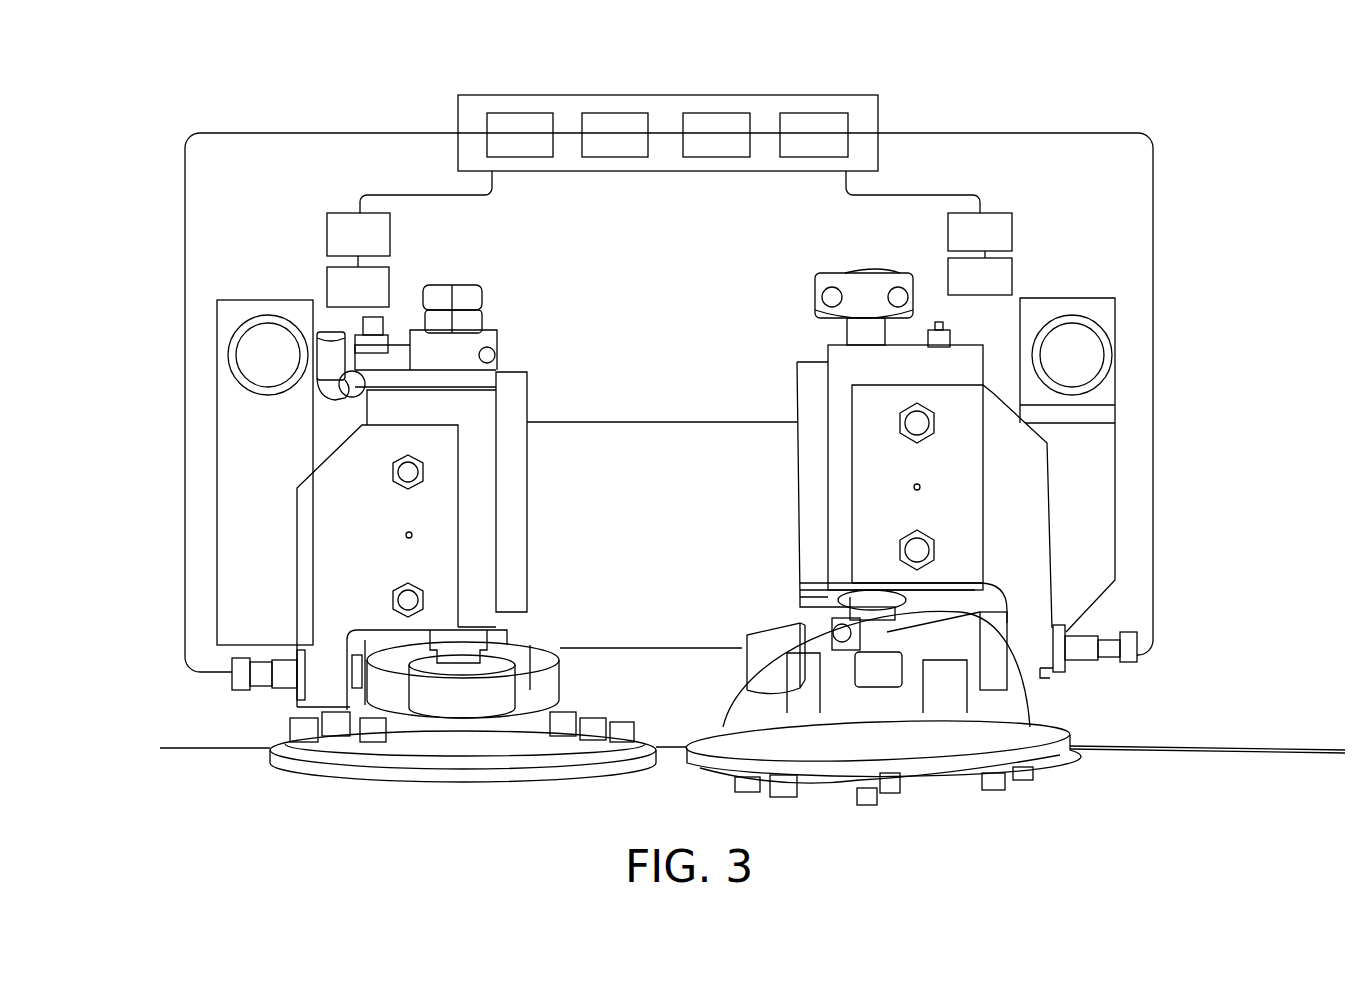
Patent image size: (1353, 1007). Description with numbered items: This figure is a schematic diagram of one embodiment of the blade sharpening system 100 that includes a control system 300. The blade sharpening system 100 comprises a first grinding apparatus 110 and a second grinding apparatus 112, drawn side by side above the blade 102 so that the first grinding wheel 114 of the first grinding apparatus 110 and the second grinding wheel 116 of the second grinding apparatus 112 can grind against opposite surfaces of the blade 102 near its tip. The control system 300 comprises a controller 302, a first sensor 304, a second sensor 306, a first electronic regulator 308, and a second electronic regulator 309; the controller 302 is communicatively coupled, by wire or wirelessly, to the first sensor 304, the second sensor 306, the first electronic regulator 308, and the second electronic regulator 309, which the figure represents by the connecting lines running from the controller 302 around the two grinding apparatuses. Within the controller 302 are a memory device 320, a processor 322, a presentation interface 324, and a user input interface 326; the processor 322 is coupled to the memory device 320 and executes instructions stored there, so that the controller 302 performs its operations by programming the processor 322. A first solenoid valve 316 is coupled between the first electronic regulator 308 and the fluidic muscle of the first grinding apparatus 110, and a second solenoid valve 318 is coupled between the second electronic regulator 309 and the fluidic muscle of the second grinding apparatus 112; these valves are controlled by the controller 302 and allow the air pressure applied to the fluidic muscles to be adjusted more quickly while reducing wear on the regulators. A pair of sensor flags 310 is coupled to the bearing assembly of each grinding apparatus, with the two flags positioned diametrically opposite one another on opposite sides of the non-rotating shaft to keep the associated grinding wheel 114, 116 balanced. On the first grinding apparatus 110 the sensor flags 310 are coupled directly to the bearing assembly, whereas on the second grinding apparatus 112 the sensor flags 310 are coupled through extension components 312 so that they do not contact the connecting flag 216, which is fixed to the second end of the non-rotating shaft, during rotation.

The blade sharpening system 100 is at (113, 140).
The blade 102 is at (212, 750).
The first grinding apparatus 110 is at (516, 345).
The second grinding apparatus 112 is at (800, 345).
The first grinding wheel 114 is at (400, 770).
The second grinding wheel 116 is at (765, 780).
The connecting flag 216 is at (1063, 660).
The control system 300 is at (664, 301).
The controller 302 is at (674, 111).
The first sensor 304 is at (240, 665).
The second sensor 306 is at (1113, 652).
The first electronic regulator 308 is at (383, 249).
The second electronic regulator 309 is at (1004, 248).
The sensor flag 310 is at (385, 697).
The extension component 312 is at (805, 690).
The first solenoid valve 316 is at (383, 302).
The second solenoid valve 318 is at (995, 590).
The memory device 320 is at (545, 149).
The processor 322 is at (640, 149).
The presentation interface 324 is at (741, 149).
The user input interface 326 is at (838, 149).